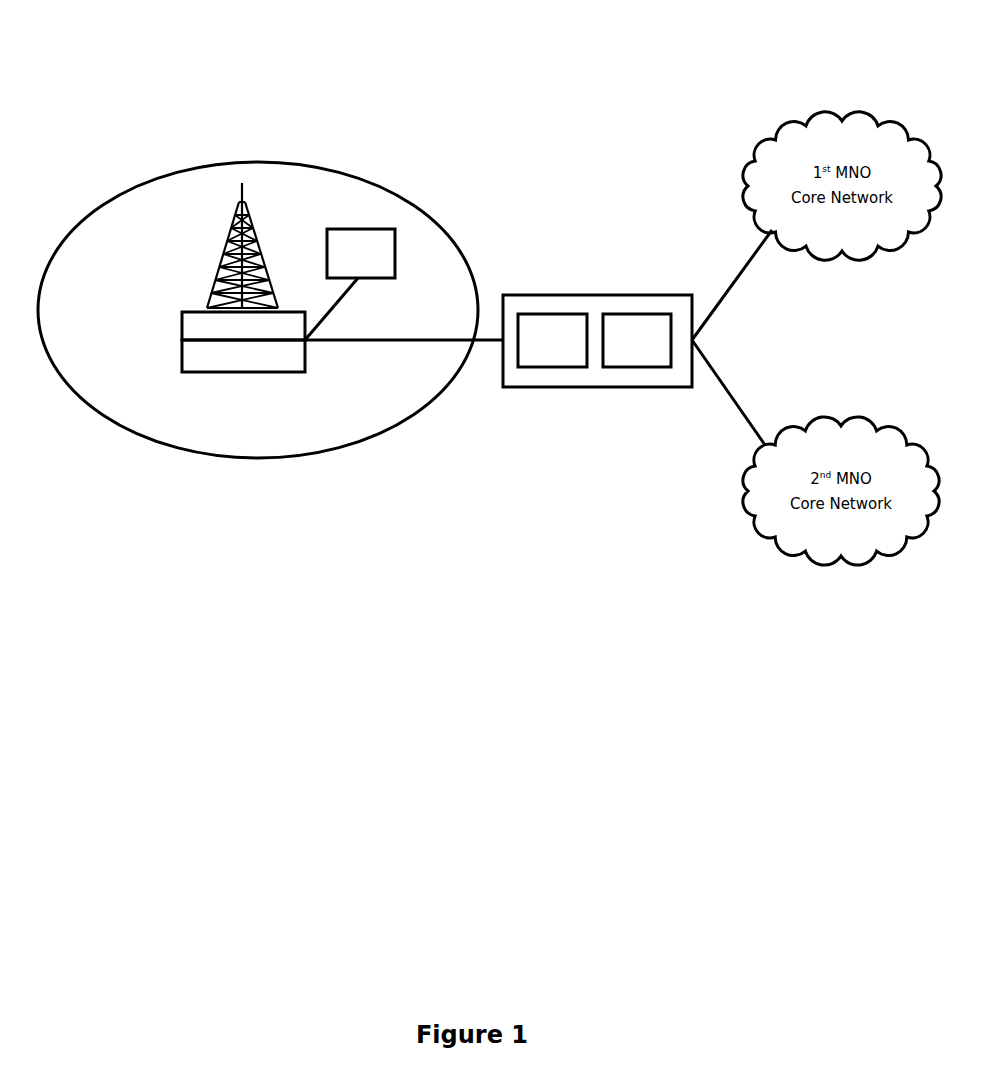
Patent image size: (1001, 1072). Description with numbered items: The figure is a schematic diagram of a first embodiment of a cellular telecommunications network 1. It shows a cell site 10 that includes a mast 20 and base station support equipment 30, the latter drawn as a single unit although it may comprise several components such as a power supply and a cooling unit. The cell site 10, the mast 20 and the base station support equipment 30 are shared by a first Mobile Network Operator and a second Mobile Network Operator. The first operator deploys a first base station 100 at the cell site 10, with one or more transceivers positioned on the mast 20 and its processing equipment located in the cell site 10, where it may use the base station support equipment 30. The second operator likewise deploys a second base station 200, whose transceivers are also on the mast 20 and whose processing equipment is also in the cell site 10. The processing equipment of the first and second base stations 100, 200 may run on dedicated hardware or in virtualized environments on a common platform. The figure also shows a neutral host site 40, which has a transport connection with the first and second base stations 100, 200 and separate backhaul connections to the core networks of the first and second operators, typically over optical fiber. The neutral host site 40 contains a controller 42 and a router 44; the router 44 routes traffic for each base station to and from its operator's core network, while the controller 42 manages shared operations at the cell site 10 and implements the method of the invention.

The cellular telecommunications network 1 is at (146, 42).
The cell site 10 is at (115, 195).
The mast 20 is at (242, 202).
The base station support equipment 30 is at (387, 229).
The neutral host site 40 is at (597, 314).
The controller 42 is at (552, 340).
The router 44 is at (637, 340).
The first base station 100 is at (182, 328).
The second base station 200 is at (182, 365).